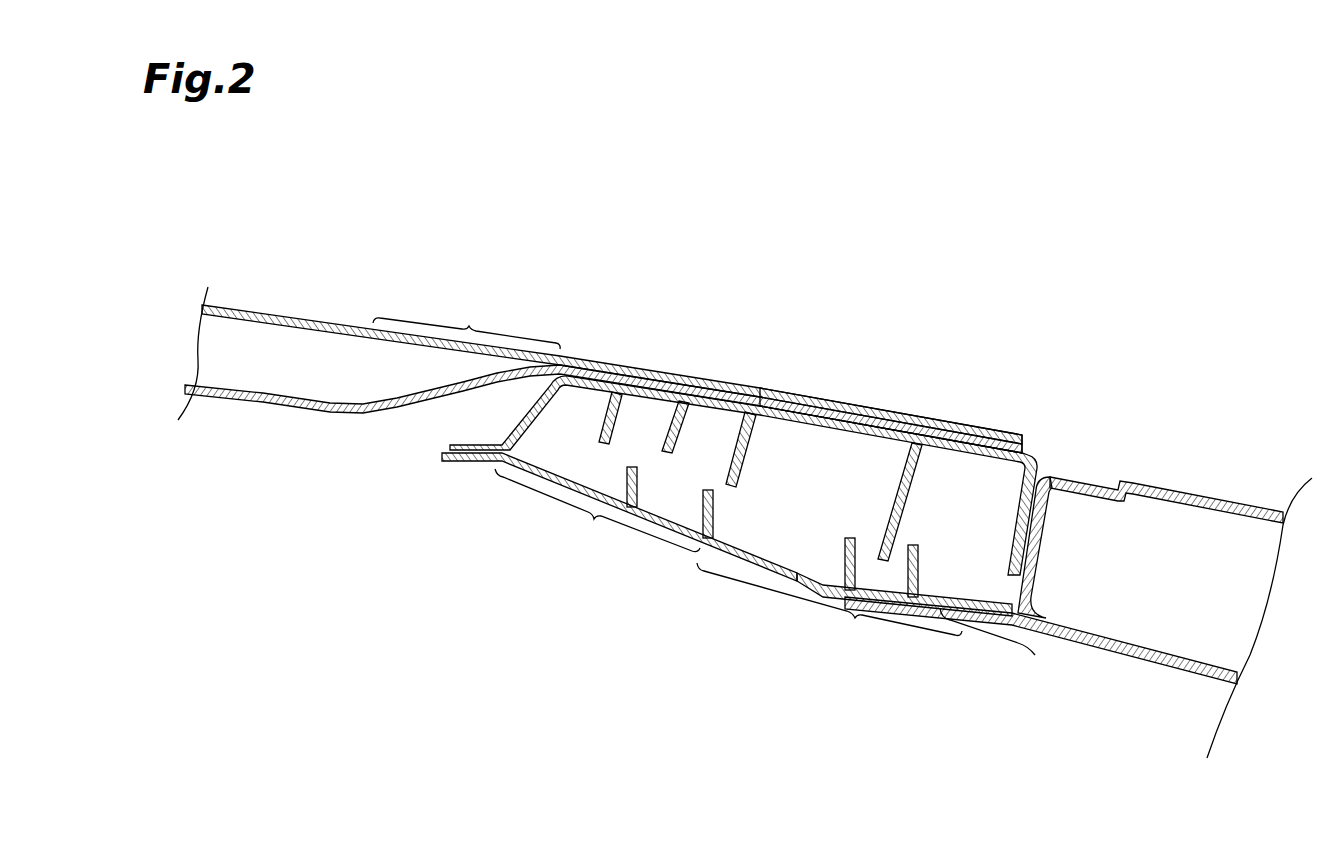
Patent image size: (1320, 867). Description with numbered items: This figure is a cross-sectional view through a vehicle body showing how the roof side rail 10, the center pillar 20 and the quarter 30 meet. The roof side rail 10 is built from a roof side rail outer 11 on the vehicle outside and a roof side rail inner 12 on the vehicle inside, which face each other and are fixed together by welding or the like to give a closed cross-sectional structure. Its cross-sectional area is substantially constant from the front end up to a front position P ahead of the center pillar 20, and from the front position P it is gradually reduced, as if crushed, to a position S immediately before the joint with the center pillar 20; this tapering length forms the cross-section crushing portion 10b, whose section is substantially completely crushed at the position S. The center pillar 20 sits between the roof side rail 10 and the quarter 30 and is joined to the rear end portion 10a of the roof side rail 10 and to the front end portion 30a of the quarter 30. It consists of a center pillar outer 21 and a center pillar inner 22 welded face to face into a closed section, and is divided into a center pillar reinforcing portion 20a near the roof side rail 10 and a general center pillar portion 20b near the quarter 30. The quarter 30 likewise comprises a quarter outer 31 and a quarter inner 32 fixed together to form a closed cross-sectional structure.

The roof side rail 10 is at (603, 342).
The roof side rail outer 11 is at (312, 314).
The roof side rail inner 12 is at (233, 397).
The rear end portion of the roof side rail 10a is at (877, 407).
The cross-section crushing portion 10b is at (466, 321).
The front position P is at (370, 400).
The position immediately before the joint portion S is at (552, 378).
The center pillar 20 is at (774, 515).
The center pillar reinforcing portion 20a is at (619, 517).
The general center pillar portion 20b is at (854, 596).
The center pillar outer 21 is at (830, 427).
The center pillar inner 22 is at (727, 553).
The quarter 30 is at (1068, 571).
The front end portion of the quarter 30a is at (1011, 639).
The quarter outer 31 is at (1250, 502).
The quarter inner 32 is at (1143, 657).